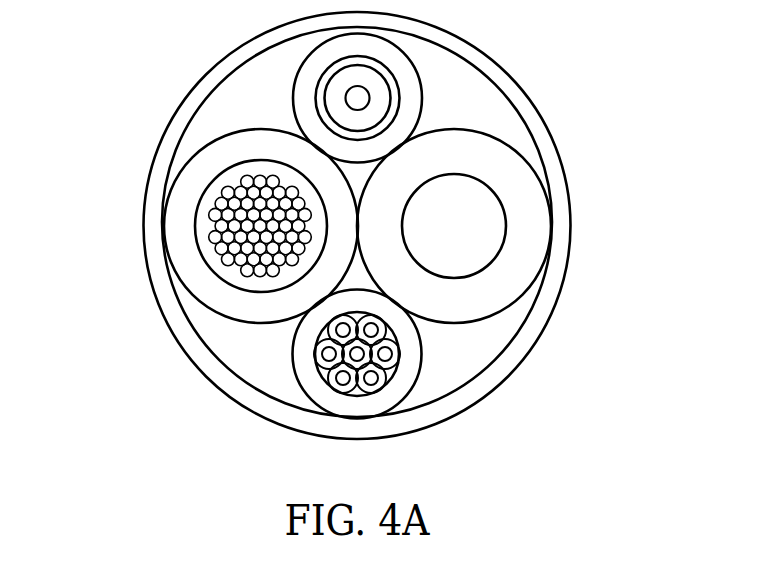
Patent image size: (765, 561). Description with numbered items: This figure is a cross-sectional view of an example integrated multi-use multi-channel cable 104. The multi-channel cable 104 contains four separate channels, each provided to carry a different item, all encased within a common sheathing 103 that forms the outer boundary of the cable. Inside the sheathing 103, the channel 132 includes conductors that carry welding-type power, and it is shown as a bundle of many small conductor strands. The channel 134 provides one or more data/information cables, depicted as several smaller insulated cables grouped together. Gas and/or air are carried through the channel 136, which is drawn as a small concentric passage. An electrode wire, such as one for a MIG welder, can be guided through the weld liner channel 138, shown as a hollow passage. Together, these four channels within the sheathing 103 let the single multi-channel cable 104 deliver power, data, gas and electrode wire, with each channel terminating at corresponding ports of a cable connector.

The multi-channel cable 104 is at (341, 236).
The sheathing 103 is at (179, 344).
The channel 132 is at (192, 225).
The channel 134 is at (307, 388).
The channel 136 is at (331, 86).
The weld liner channel 138 is at (521, 226).